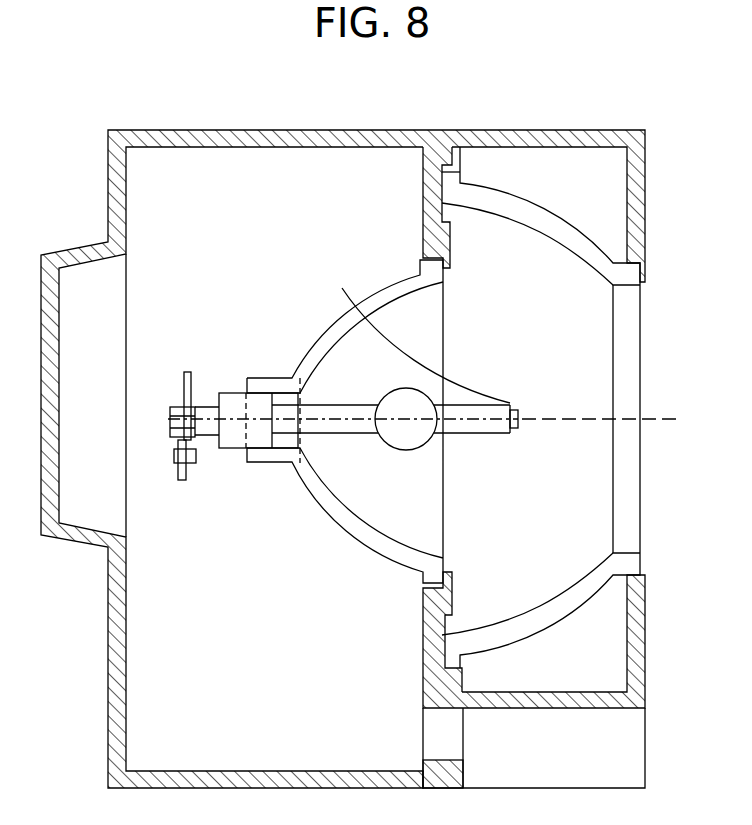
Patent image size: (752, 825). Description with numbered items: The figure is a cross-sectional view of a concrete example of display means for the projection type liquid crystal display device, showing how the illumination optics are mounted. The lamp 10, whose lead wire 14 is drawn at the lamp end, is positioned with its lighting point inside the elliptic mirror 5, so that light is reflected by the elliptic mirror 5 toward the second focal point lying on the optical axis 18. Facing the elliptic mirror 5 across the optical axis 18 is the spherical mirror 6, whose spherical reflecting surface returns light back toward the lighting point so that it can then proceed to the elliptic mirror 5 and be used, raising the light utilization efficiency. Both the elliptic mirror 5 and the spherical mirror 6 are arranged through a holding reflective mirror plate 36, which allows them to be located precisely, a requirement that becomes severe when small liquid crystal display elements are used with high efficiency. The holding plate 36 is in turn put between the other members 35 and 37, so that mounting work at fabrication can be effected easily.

The other member 35 is at (208, 131).
The holding reflective mirror plate 36 is at (445, 131).
The other member 37 is at (547, 131).
The spherical mirror 6 is at (548, 217).
The elliptic mirror 5 is at (343, 318).
The lead wire 14 is at (488, 397).
The lamp 10 is at (485, 437).
The optical axis 18 is at (672, 412).